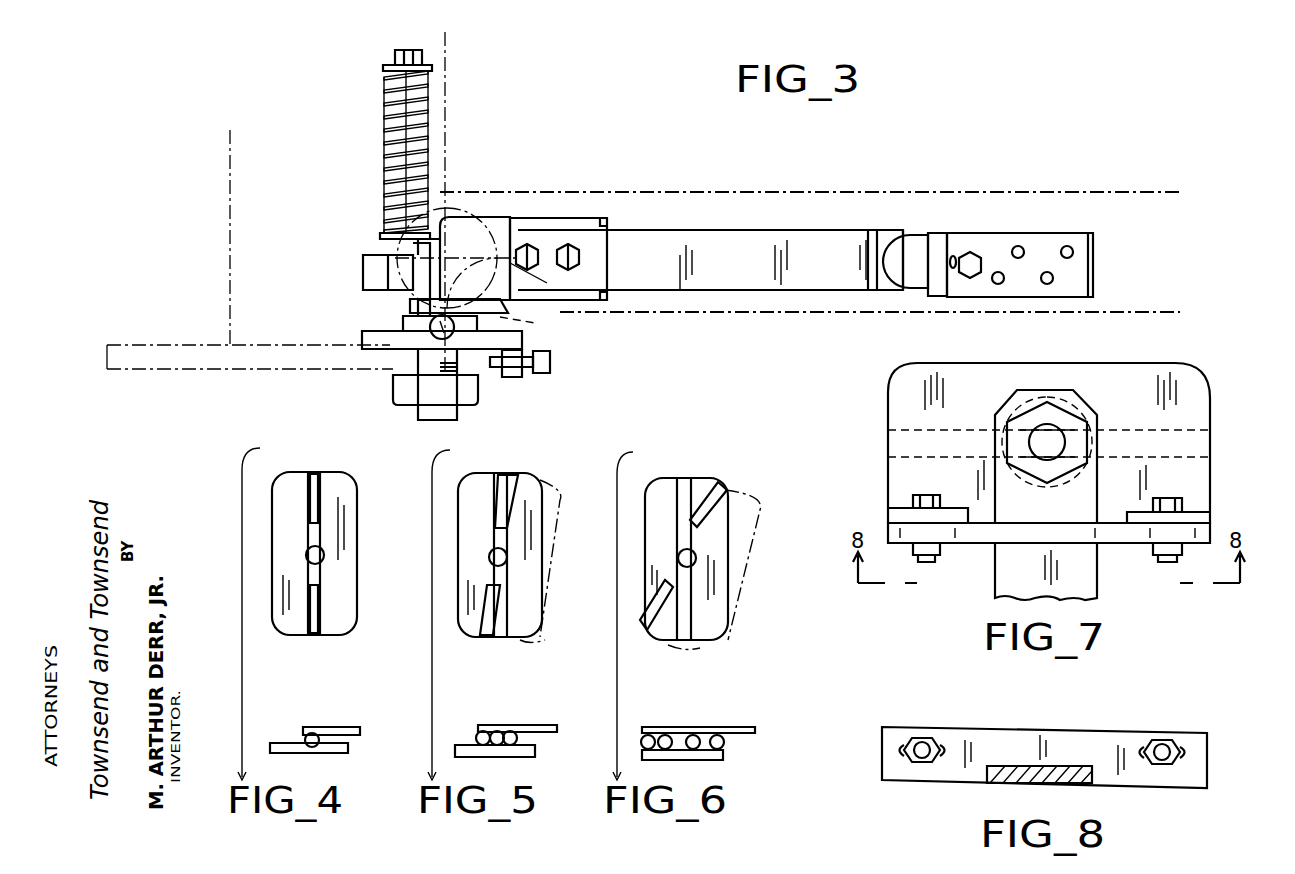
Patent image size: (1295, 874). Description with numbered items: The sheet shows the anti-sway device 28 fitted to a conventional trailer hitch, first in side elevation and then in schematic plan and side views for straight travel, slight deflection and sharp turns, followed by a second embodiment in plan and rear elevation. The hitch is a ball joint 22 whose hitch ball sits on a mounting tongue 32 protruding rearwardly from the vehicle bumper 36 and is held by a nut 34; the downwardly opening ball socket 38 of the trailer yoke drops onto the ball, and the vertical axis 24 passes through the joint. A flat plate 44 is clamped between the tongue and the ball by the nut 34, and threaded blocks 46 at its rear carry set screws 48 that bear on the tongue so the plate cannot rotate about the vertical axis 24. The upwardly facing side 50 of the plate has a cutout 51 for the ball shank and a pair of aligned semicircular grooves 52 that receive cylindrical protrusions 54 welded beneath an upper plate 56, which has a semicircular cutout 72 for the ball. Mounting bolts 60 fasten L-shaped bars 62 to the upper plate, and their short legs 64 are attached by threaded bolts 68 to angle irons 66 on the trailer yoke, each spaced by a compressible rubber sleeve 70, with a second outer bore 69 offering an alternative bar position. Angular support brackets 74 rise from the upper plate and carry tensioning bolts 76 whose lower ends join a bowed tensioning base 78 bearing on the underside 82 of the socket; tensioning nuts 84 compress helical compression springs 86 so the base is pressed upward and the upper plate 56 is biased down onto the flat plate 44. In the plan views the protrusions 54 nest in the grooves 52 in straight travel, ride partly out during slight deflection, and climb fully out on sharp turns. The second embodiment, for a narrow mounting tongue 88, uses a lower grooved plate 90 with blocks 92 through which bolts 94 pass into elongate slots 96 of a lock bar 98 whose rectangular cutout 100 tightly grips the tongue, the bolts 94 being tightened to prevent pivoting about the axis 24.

In FIG. 3, the ball joint 22 is at (447, 190).
In FIG. 3, the vertical axis 24 is at (448, 47).
In FIG. 3, the anti-sway device 28 is at (612, 343).
In FIG. 3, the mounting tongue 32 is at (208, 380).
In FIG. 3, the nut 34 is at (405, 405).
In FIG. 3, the bumper 36 is at (232, 205).
In FIG. 3, the ball socket 38 is at (483, 190).
In FIG. 3, the flat plate 44 is at (362, 343).
In FIG. 4, the flat plate 44 is at (355, 593).
In FIG. 5, the flat plate 44 is at (545, 593).
In FIG. 6, the flat plate 44 is at (728, 592).
In FIG. 3, the threaded blocks 46 is at (516, 378).
In FIG. 3, the set screws 48 is at (552, 366).
In FIG. 3, the upwardly facing side 50 is at (362, 330).
In FIG. 4, the upwardly facing side 50 is at (340, 608).
In FIG. 5, the upwardly facing side 50 is at (530, 607).
In FIG. 6, the upwardly facing side 50 is at (710, 612).
In FIG. 4, the cutout 51 is at (307, 550).
In FIG. 5, the cutout 51 is at (492, 551).
In FIG. 6, the cutout 51 is at (680, 554).
In FIG. 3, the grooves 52 is at (431, 334).
In FIG. 4, the grooves 52 is at (305, 740).
In FIG. 5, the grooves 52 is at (500, 480).
In FIG. 6, the grooves 52 is at (684, 490).
In FIG. 3, the cylindrical protrusions 54 is at (449, 338).
In FIG. 4, the cylindrical protrusions 54 is at (312, 485).
In FIG. 5, the cylindrical protrusions 54 is at (512, 490).
In FIG. 6, the cylindrical protrusions 54 is at (655, 625).
In FIG. 3, the upper plate 56 is at (548, 304).
In FIG. 4, the upper plate 56 is at (350, 727).
In FIG. 5, the upper plate 56 is at (560, 495).
In FIG. 6, the upper plate 56 is at (762, 502).
In FIG. 3, the mounting bolts 60 is at (580, 261).
In FIG. 3, the L-shaped bars 62 is at (672, 240).
In FIG. 3, the short legs 64 is at (878, 242).
In FIG. 3, the angle irons 66 is at (1041, 246).
In FIG. 3, the threaded bolts 68 is at (971, 251).
In FIG. 3, the outer bore 69 is at (953, 270).
In FIG. 3, the rubber sleeve 70 is at (914, 243).
In FIG. 3, the semicircular cutout 72 is at (530, 330).
In FIG. 3, the angular support brackets 74 is at (433, 252).
In FIG. 3, the tensioning bolts 76 is at (400, 137).
In FIG. 3, the tensioning base 78 is at (366, 272).
In FIG. 3, the underside 82 is at (375, 258).
In FIG. 3, the tensioning nuts 84 is at (398, 50).
In FIG. 3, the helical compression springs 86 is at (386, 100).
In FIG. 7, the mounting tongue 88 is at (1098, 583).
In FIG. 8, the mounting tongue 88 is at (1058, 770).
In FIG. 7, the lower grooved plate 90 is at (1212, 397).
In FIG. 7, the blocks 92 is at (1204, 520).
In FIG. 7, the bolts 94 is at (1186, 502).
In FIG. 8, the slots 96 is at (1184, 748).
In FIG. 8, the lock bar 98 is at (1190, 774).
In FIG. 8, the rectangular cutout 100 is at (1030, 768).